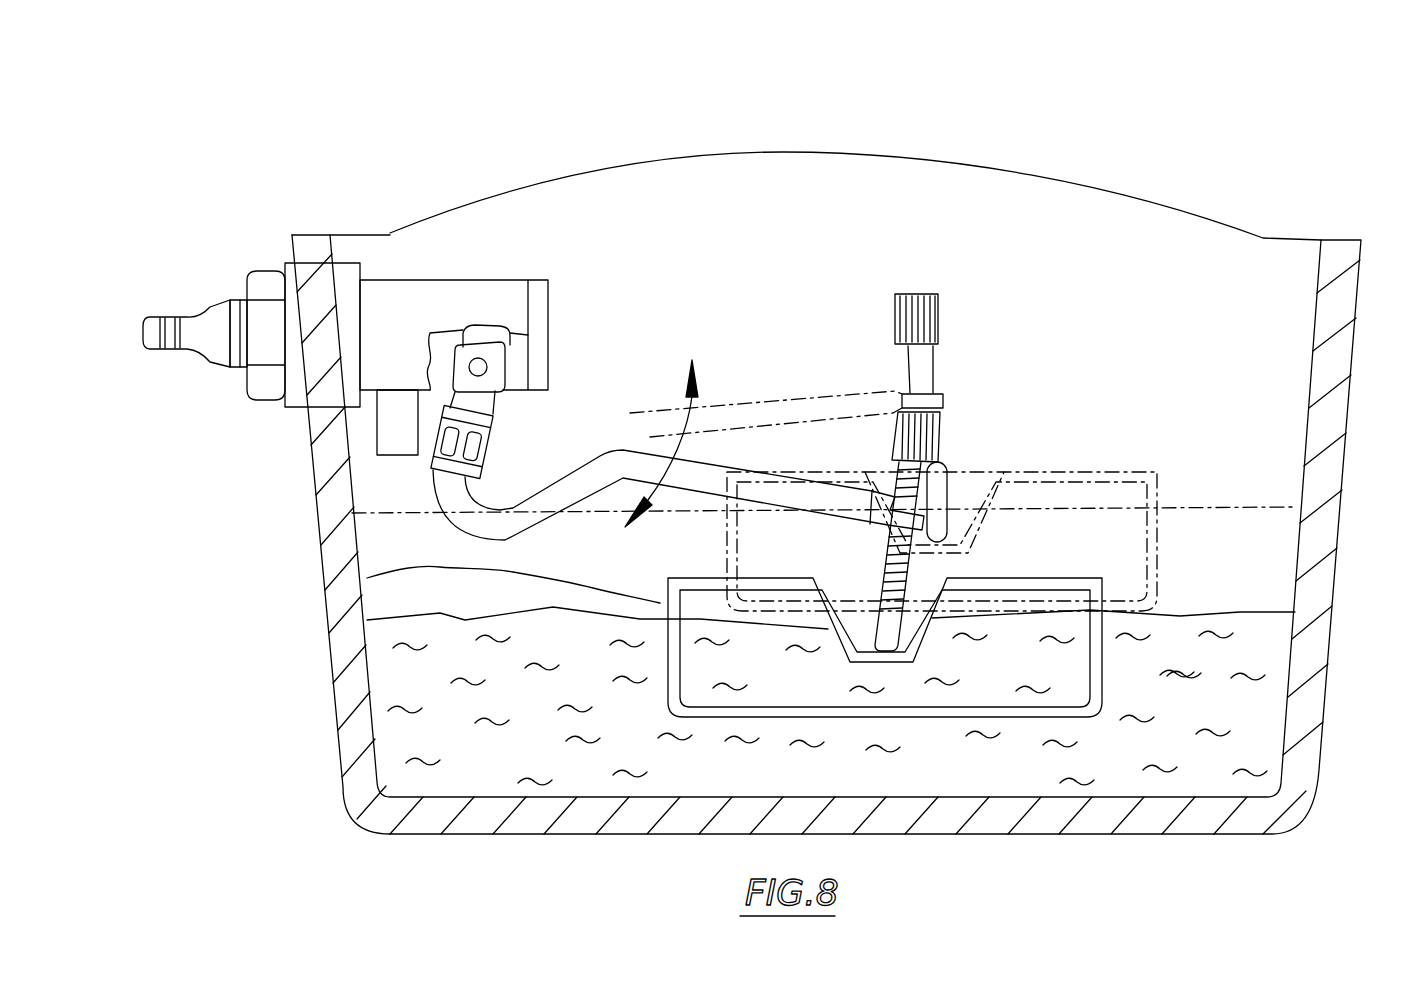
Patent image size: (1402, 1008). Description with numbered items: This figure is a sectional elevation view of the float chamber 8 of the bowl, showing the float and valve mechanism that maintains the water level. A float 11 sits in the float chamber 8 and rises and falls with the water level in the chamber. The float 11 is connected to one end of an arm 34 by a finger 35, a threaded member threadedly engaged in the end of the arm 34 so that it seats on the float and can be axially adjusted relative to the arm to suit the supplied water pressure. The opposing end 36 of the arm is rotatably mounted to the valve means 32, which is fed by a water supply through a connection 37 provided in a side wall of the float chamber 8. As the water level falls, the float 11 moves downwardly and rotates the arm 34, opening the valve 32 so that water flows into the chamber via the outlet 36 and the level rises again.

The float chamber 8 is at (773, 271).
The float 11 is at (326, 583).
The valve means 32 is at (403, 307).
The arm 34 is at (576, 495).
The finger 35 is at (908, 482).
The opposing end of the arm 36 is at (370, 460).
The connection 37 is at (158, 303).